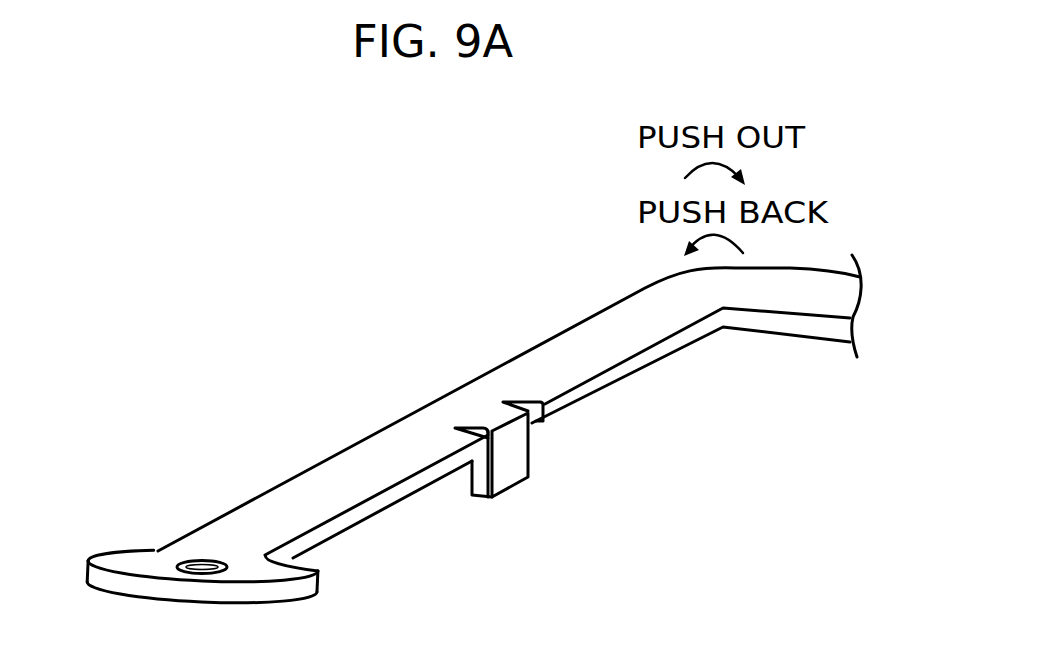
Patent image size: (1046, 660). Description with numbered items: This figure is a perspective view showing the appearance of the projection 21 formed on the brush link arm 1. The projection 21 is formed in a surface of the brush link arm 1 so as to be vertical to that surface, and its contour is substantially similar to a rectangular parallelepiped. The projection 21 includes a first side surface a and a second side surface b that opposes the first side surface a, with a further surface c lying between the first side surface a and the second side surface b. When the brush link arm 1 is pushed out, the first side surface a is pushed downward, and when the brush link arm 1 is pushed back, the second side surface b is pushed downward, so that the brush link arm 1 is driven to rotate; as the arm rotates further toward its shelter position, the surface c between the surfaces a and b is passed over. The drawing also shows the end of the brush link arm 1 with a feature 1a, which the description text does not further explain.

The brush link arm 1 is at (593, 317).
The pivot hole 1a is at (193, 565).
The projection 21 is at (495, 422).
The first side surface a is at (484, 478).
The second side surface b is at (532, 457).
The surface c is at (514, 472).